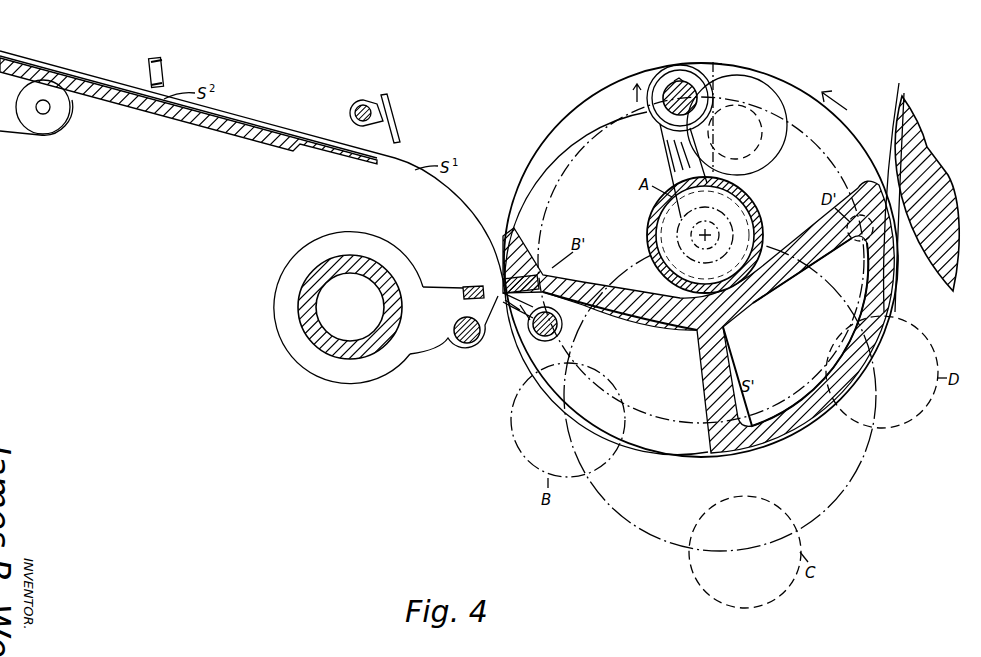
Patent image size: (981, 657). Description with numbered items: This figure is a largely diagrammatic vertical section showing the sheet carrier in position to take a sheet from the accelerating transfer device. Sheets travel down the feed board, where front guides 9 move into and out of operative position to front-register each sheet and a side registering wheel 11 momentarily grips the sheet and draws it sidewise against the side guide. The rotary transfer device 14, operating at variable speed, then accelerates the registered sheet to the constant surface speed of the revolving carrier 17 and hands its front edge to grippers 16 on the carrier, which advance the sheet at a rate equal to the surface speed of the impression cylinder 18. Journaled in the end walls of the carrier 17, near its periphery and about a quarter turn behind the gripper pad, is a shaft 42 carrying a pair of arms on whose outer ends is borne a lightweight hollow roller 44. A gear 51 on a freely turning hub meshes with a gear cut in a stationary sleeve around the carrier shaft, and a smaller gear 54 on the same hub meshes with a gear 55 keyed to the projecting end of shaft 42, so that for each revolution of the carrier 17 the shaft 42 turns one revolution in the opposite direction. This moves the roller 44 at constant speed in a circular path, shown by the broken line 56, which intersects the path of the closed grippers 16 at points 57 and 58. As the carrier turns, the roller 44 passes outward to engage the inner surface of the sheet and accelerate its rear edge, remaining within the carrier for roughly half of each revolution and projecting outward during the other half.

The front guides 9 is at (397, 125).
The side registering wheel 11 is at (160, 71).
The rotary transfer device 14 is at (352, 378).
The grippers 16 is at (520, 325).
The revolving carrier 17 is at (882, 283).
The impression cylinder 18 is at (912, 133).
The shaft 42 is at (667, 86).
The hollow roller 44 is at (758, 215).
The gear 51 is at (770, 72).
The smaller gear 54 is at (737, 118).
The gear 55 is at (707, 62).
The broken line 56 is at (862, 470).
The intersection point 57 is at (568, 413).
The intersection point 58 is at (872, 362).